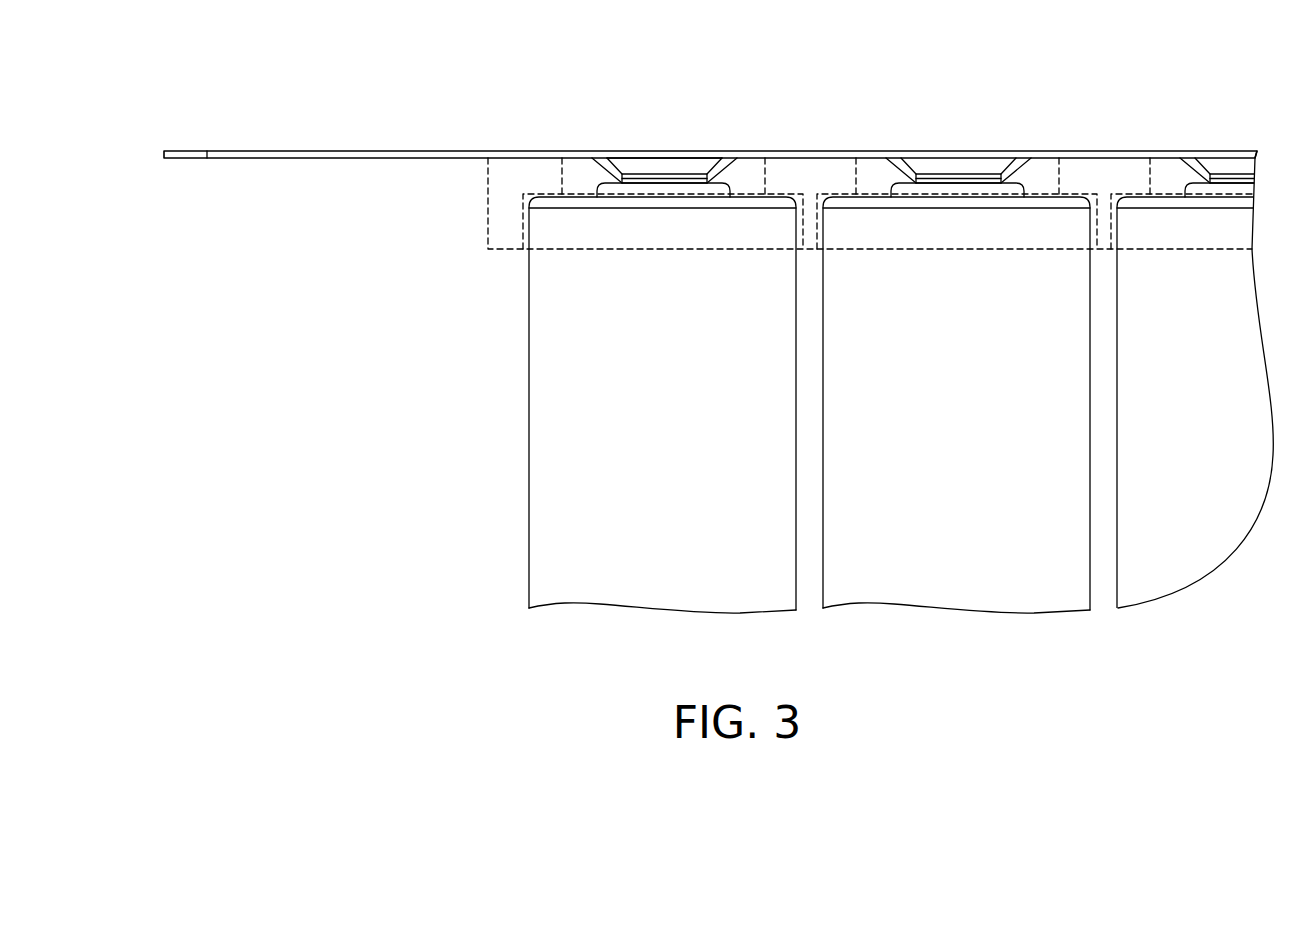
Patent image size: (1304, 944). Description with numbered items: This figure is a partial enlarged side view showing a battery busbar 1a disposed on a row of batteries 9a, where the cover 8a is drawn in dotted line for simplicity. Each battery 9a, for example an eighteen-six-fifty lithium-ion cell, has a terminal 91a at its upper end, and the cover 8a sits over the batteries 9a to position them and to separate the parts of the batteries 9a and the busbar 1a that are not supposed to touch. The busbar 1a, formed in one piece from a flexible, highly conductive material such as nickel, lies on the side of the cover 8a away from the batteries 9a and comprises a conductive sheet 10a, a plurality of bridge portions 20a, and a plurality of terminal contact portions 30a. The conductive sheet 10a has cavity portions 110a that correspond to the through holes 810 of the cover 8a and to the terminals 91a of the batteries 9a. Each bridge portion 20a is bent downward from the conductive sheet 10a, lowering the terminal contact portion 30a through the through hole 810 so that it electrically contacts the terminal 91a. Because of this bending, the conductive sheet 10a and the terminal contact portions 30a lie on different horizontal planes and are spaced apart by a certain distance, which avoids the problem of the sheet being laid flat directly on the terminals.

The battery busbar 1a is at (291, 128).
The conductive sheet 10a is at (403, 155).
The cavity portion 110a is at (680, 150).
The bridge portion 20a is at (598, 172).
The terminal contact portion 30a is at (644, 178).
The through hole 810 is at (767, 182).
The cover 8a is at (488, 210).
The terminal 91a is at (662, 190).
The battery 9a is at (575, 462).